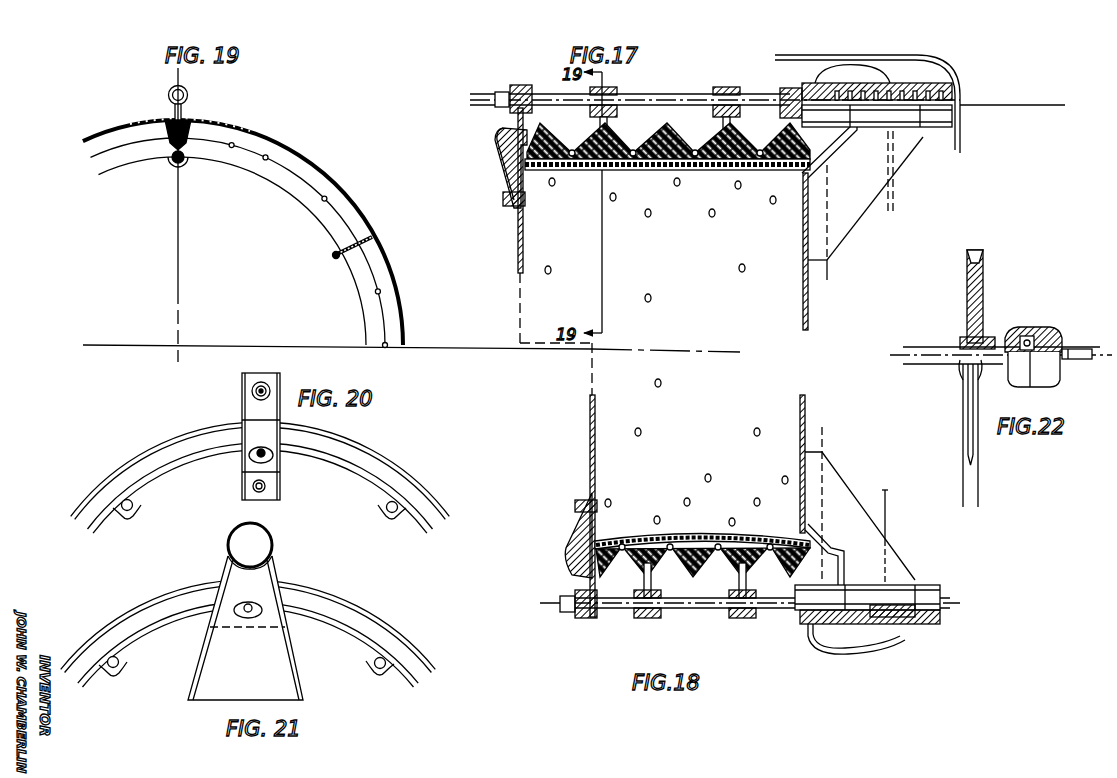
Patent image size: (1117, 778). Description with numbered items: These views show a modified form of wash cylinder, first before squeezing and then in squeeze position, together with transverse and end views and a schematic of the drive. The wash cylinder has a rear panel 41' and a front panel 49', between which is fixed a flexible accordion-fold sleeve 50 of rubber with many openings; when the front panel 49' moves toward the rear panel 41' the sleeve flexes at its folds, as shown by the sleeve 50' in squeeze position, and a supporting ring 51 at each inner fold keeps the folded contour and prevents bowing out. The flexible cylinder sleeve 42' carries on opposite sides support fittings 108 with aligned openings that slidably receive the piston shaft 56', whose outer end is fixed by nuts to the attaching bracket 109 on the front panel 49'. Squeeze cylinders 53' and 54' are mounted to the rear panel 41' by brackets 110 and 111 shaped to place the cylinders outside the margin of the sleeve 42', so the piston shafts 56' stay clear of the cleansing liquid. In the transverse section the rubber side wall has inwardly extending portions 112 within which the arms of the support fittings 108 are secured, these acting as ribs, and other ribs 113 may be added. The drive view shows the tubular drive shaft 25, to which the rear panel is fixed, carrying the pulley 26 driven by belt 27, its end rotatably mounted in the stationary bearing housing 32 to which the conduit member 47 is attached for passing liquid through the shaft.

In FIG. 22, the drive shaft 25 is at (925, 350).
In FIG. 22, the pulley 26 is at (967, 297).
In FIG. 22, the belt 27 is at (968, 480).
In FIG. 22, the stationary bearing housing 32 is at (1040, 330).
In FIG. 21, the rear panel 41' is at (248, 633).
In FIG. 17, the rear panel 41' is at (784, 251).
In FIG. 19, the flexible cylinder sleeve 42' is at (243, 233).
In FIG. 17, the flexible cylinder sleeve 42' is at (660, 240).
In FIG. 22, the conduit member 47 is at (1082, 349).
In FIG. 20, the front panel 49' is at (260, 477).
In FIG. 17, the front panel 49' is at (498, 225).
In FIG. 18, the front panel 49' is at (697, 498).
In FIG. 17, the flexible accordion-fold-type sleeve 50 is at (667, 183).
In FIG. 18, the flexible accordion-fold-type sleeve 50' is at (702, 540).
In FIG. 17, the supporting ring 51 is at (634, 150).
In FIG. 21, the squeeze cylinder 53' is at (270, 546).
In FIG. 17, the squeeze cylinder 53' is at (920, 104).
In FIG. 18, the squeeze cylinder 54' is at (869, 620).
In FIG. 19, the piston shaft 56' is at (160, 104).
In FIG. 17, the piston shaft 56' is at (715, 88).
In FIG. 18, the piston shaft 56' is at (750, 614).
In FIG. 19, the support fitting 108 is at (183, 104).
In FIG. 17, the support fitting 108 is at (730, 87).
In FIG. 18, the support fitting 108 is at (644, 618).
In FIG. 20, the attaching bracket 109 is at (258, 435).
In FIG. 17, the attaching bracket 109 is at (517, 122).
In FIG. 21, the bracket 110 is at (220, 692).
In FIG. 17, the bracket 110 is at (855, 212).
In FIG. 18, the bracket 111 is at (846, 498).
In FIG. 19, the inwardly extending portion 112 is at (250, 122).
In FIG. 19, the rib 113 is at (362, 248).